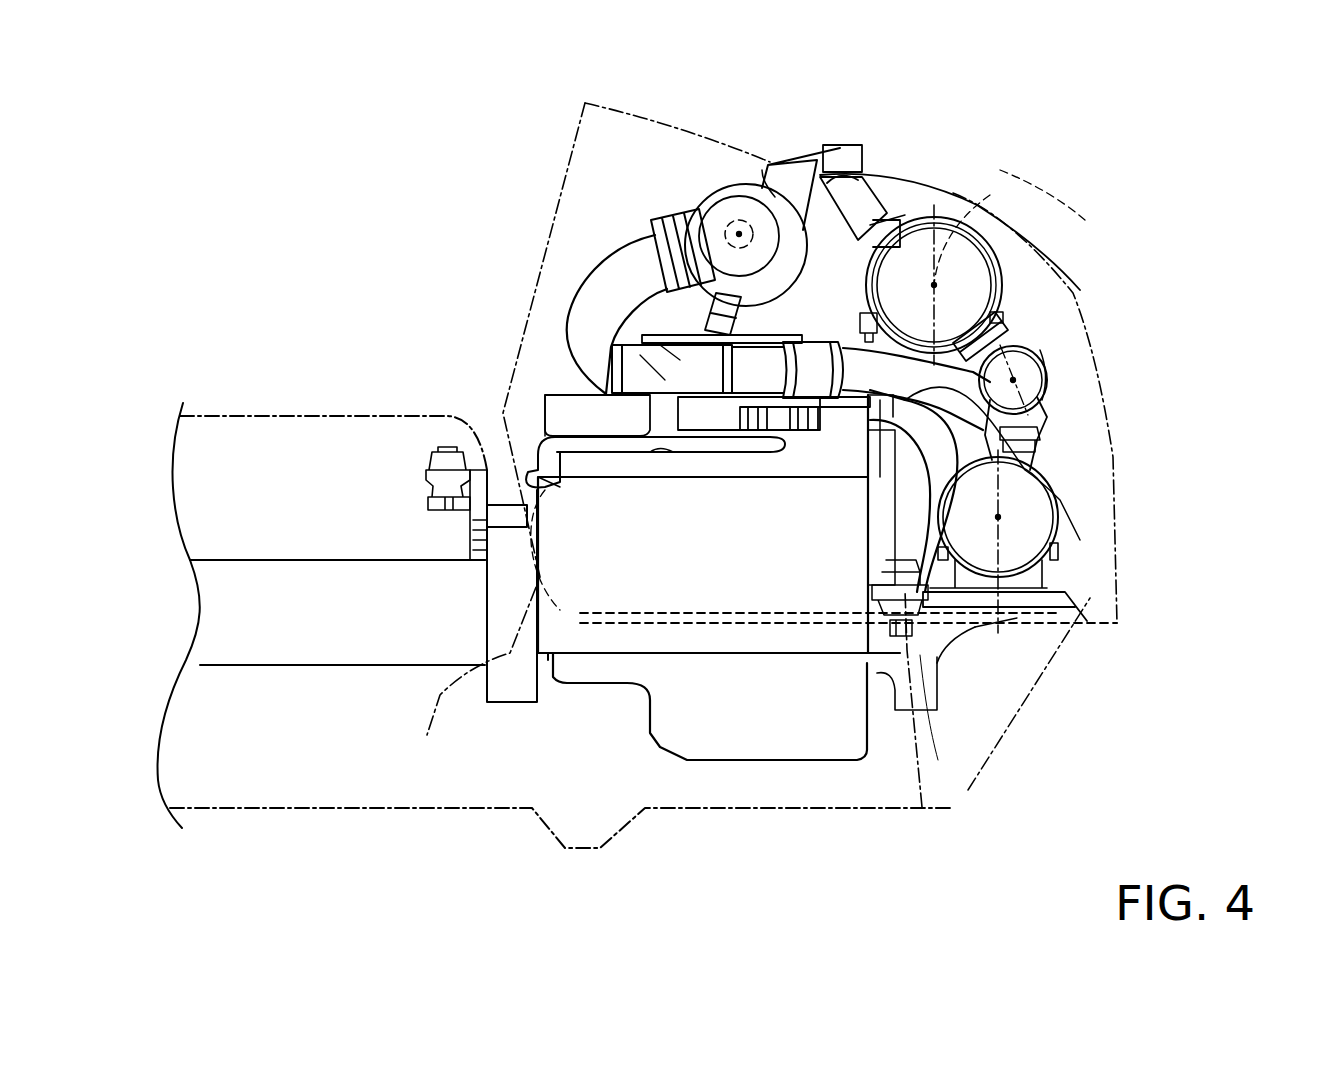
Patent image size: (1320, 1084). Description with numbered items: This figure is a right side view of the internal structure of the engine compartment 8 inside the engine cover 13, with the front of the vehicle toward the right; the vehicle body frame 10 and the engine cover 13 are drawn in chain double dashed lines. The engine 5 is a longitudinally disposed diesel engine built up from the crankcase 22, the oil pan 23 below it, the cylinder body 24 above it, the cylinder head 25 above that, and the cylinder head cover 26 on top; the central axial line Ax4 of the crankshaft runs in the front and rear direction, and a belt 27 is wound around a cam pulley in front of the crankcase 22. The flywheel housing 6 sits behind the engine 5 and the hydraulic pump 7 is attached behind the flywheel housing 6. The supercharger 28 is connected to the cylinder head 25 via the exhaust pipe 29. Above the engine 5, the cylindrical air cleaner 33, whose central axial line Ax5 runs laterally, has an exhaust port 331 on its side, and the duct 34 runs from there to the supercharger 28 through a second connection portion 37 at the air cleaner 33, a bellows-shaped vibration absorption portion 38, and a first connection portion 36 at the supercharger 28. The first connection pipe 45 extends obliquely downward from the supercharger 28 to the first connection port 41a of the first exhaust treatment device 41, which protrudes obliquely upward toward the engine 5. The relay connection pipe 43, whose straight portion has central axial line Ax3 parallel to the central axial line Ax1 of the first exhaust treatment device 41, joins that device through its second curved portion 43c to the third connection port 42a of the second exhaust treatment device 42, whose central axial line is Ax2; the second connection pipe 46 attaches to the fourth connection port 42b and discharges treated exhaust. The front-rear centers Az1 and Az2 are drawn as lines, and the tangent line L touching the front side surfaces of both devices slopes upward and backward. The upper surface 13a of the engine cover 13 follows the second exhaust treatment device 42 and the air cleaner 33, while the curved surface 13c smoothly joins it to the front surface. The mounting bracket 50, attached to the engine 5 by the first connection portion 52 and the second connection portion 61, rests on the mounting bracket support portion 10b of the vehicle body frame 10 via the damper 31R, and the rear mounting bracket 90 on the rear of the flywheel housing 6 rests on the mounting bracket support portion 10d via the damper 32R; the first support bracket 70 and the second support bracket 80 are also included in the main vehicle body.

The engine 5 is at (600, 392).
The flywheel housing 6 is at (503, 690).
The hydraulic pump 7 is at (256, 578).
The engine compartment 8 is at (625, 227).
The vehicle body frame 10 is at (230, 412).
The mounting bracket support portion 10b is at (925, 720).
The mounting bracket support portion 10d is at (436, 512).
The engine cover 13 is at (1030, 215).
The upper surface 13a is at (930, 183).
The curved surface 13c is at (1050, 245).
The crankcase 22 is at (725, 640).
The oil pan 23 is at (690, 740).
The cylinder body 24 is at (630, 590).
The cylinder head 25 is at (545, 405).
The cylinder head cover 26 is at (550, 385).
The belt 27 is at (970, 585).
The supercharger 28 is at (655, 330).
The exhaust pipe 29 is at (548, 450).
The damper 31R is at (925, 590).
The damper 32R is at (432, 462).
The air cleaner 33 is at (768, 180).
The exhaust port 331 is at (790, 190).
The duct 34 is at (585, 380).
The first connection portion 36 is at (668, 345).
The second connection portion 37 is at (740, 232).
The vibration absorption portion 38 is at (665, 345).
The first exhaust treatment device 41 is at (1037, 550).
The first connection port 41a is at (990, 447).
The second exhaust treatment device 42 is at (965, 213).
The third connection port 42a is at (1005, 340).
The fourth connection port 42b is at (888, 225).
The relay connection pipe 43 is at (1047, 400).
The second curved portion 43c is at (1044, 375).
The first connection pipe 45 is at (1000, 430).
The second connection pipe 46 is at (845, 195).
The mounting bracket 50 is at (940, 590).
The first connection portion 52 is at (870, 640).
The second connection portion 61 is at (810, 462).
The first support bracket 70 is at (990, 590).
The second support bracket 80 is at (1003, 322).
The rear mounting bracket 90 is at (528, 440).
The central axial line Ax1 is at (1000, 517).
The central axial line Ax2 is at (935, 285).
The central axial line Ax3 is at (1016, 380).
The central axial line Ax4 is at (488, 440).
The central axial line Ax5 is at (739, 234).
The center Az1 is at (1015, 595).
The center Az2 is at (960, 200).
The tangent line L is at (1118, 597).